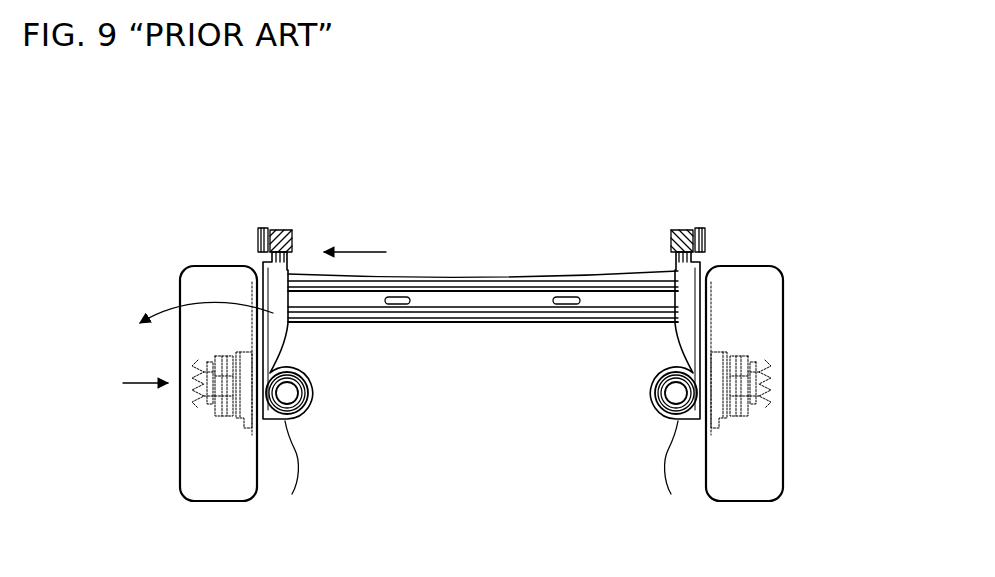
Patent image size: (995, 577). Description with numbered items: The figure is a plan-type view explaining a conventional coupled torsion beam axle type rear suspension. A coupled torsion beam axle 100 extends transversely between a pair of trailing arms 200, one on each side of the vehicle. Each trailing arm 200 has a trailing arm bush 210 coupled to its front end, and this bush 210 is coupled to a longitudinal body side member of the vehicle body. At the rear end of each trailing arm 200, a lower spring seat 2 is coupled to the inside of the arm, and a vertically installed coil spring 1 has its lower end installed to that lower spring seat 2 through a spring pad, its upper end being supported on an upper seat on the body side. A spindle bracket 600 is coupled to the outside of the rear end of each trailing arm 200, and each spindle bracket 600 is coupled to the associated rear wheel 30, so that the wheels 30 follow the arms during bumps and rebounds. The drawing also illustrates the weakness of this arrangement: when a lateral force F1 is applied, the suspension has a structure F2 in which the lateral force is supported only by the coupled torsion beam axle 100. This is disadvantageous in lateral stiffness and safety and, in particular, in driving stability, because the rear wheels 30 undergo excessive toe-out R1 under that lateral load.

The coil spring 1 is at (481, 468).
The lower spring seat 2 is at (314, 393).
The rear wheel 30 is at (207, 470).
The coupled torsion beam axle 100 is at (486, 274).
The trailing arm 200 is at (275, 286).
The trailing arm bush 210 is at (277, 235).
The spindle bracket 600 is at (217, 407).
The excessive toe-out R1 is at (191, 324).
The lateral force F1 is at (133, 384).
The structure in which lateral force is supported only by the axle F2 is at (355, 237).